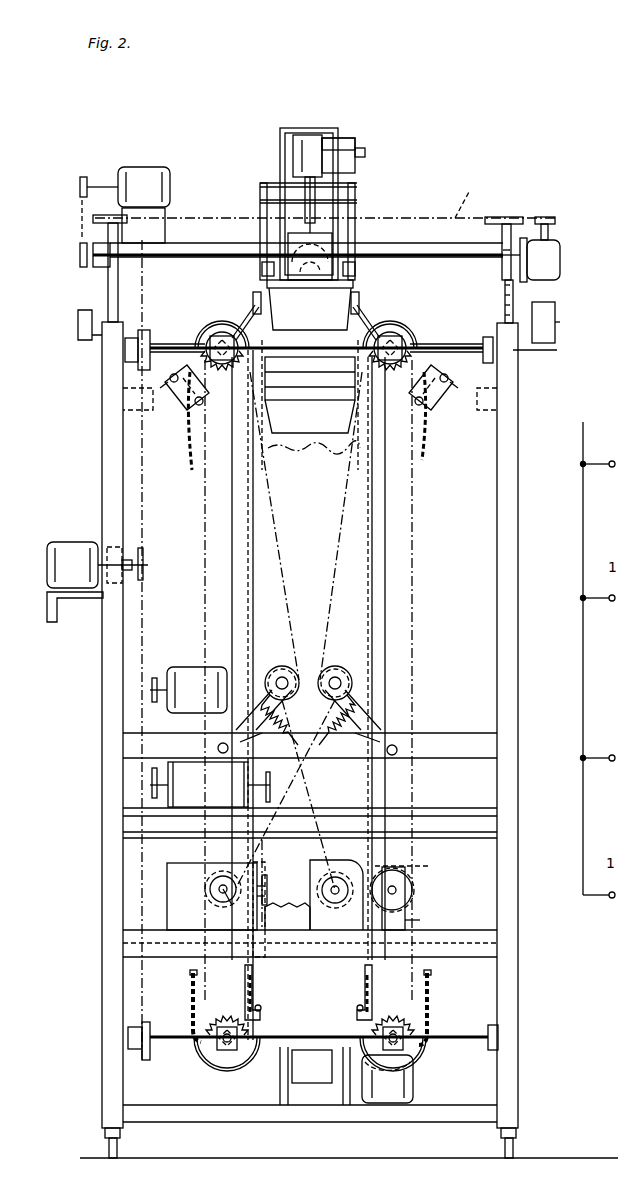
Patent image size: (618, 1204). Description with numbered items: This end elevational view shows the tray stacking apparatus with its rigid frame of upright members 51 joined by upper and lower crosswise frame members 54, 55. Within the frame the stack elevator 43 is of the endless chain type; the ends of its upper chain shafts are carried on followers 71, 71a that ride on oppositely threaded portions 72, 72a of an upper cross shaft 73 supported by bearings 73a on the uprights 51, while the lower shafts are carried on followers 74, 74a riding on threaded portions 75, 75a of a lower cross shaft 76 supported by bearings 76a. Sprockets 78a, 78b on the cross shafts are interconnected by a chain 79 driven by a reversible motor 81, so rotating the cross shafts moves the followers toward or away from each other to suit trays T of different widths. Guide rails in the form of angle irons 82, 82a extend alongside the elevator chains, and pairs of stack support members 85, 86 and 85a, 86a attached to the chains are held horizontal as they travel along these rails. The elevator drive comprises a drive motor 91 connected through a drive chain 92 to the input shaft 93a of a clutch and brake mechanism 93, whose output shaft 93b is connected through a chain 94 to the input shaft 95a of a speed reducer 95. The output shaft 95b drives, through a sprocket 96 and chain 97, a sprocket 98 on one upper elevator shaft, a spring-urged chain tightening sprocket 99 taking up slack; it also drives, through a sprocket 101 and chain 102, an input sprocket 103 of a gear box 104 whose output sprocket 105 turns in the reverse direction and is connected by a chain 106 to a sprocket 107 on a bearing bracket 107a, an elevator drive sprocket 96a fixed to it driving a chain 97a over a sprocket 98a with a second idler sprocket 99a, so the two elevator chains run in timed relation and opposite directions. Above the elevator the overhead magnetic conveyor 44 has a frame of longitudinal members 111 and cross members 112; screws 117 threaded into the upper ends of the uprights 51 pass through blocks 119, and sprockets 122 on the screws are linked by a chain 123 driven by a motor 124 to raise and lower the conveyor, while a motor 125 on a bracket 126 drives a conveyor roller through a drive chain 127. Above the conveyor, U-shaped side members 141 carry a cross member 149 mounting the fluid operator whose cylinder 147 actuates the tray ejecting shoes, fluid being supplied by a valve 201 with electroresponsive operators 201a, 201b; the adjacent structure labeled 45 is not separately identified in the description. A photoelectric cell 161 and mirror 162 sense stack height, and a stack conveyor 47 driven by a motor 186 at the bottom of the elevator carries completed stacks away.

The stack elevator 43 is at (374, 548).
The overhead magnetic conveyor 44 is at (332, 245).
The clutch frame 45 is at (360, 198).
The stack conveyor 47 is at (215, 1033).
The upright members 51 is at (520, 635).
The upper crosswise extending frame members 54 is at (136, 398).
The lower crosswise extending frame members 55 is at (418, 1125).
The follower 71 is at (226, 340).
The follower 71a is at (392, 340).
The threaded portion 72 is at (198, 340).
The threaded portion 72a is at (430, 340).
The upper cross shaft 73 is at (468, 345).
The bearings 73a is at (505, 325).
The lower follower 74 is at (215, 1048).
The lower follower 74a is at (410, 1025).
The threaded portion 75 is at (193, 1020).
The threaded portion 75a is at (430, 1045).
The lower cross shaft 76 is at (455, 1033).
The bearings 76a is at (498, 1032).
The sprocket 78a is at (145, 1060).
The sprocket 78b is at (146, 330).
The chain 79 is at (142, 500).
The reversible motor 81 is at (65, 542).
The guide rail 82 is at (232, 618).
The guide rail 82a is at (385, 648).
The stack support member 85 is at (269, 992).
The stack support member 85a is at (345, 992).
The stack support member 86 is at (186, 410).
The stack support member 86a is at (432, 410).
The drive motor 91 is at (178, 667).
The drive chain 92 is at (150, 722).
The clutch and brake mechanism 93 is at (190, 790).
The input shaft 93a is at (150, 785).
The output shaft 93b is at (270, 790).
The drive chain 94 is at (268, 845).
The speed reducer 95 is at (167, 890).
The input shaft 95a is at (267, 878).
The output shaft 95b is at (228, 902).
The sprocket 96 is at (210, 882).
The elevator drive sprocket 96a is at (414, 882).
The chain 97 is at (205, 490).
The chain 97a is at (412, 588).
The sprocket 98 is at (195, 385).
The sprocket 98a is at (418, 385).
The chain tightening sprocket 99 is at (280, 666).
The idler sprocket 99a is at (337, 666).
The sprocket 101 is at (232, 934).
The chain 102 is at (283, 903).
The input sprocket 103 is at (333, 875).
The gear box 104 is at (350, 860).
The output sprocket 105 is at (395, 943).
The chain 106 is at (417, 861).
The sprocket 107 is at (410, 893).
The bearing bracket 107a is at (405, 920).
The longitudinal members 111 is at (93, 263).
The cross members 112 is at (470, 251).
The screws 117 is at (516, 298).
The blocks 119 is at (500, 256).
The sprockets 122 is at (508, 217).
The chain 123 is at (475, 196).
The motor 124 is at (560, 258).
The motor 125 is at (140, 167).
The bracket 126 is at (150, 222).
The drive chain 127 is at (82, 205).
The U-shaped side members 141 is at (285, 155).
The cylinder 147 is at (280, 132).
The cross member 149 is at (300, 135).
The photoelectric cell 161 is at (555, 322).
The mirror 162 is at (78, 325).
The motor 186 is at (370, 1103).
The valve 201 is at (355, 160).
The electroresponsive operator 201a is at (345, 138).
The electroresponsive operator 201b is at (365, 170).
The trays T is at (316, 420).